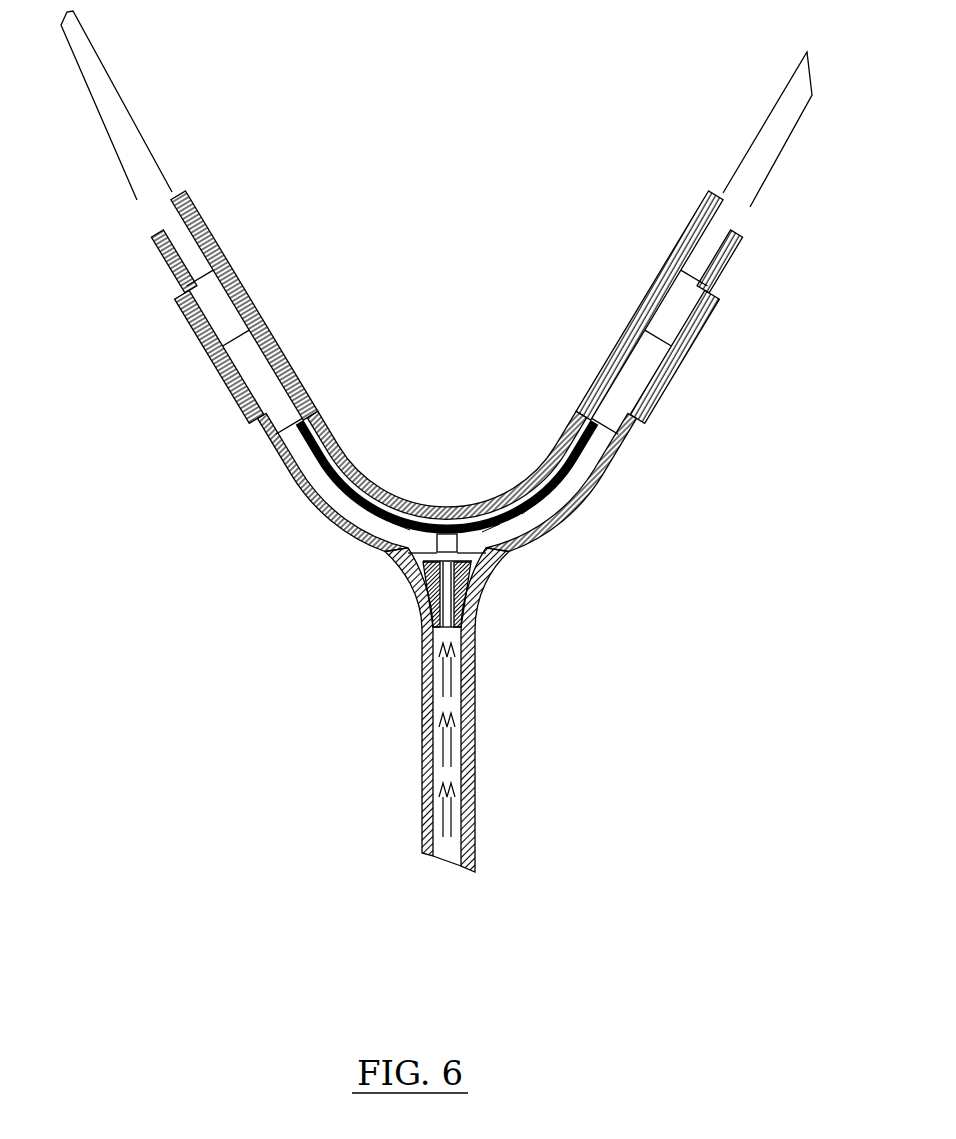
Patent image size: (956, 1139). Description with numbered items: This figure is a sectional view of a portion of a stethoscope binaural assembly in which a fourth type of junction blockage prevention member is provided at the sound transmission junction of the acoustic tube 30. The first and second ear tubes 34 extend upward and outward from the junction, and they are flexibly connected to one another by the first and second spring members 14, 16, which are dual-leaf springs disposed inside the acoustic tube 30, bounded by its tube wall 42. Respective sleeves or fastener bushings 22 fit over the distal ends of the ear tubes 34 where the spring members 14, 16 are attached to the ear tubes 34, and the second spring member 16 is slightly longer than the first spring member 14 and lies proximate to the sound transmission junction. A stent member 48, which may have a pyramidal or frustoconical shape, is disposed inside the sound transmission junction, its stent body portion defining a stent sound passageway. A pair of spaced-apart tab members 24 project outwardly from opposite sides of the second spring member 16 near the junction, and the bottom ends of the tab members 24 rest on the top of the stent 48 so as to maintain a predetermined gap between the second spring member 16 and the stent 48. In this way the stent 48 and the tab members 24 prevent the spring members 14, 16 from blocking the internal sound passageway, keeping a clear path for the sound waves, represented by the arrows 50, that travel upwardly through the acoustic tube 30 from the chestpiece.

The first spring member 14 is at (488, 505).
The second spring member 16 is at (540, 517).
The fastener bushing 22 is at (253, 365).
The tab member 24 is at (407, 566).
The acoustic tube 30 is at (477, 835).
The ear tube 34 is at (142, 155).
The tube wall 42 is at (348, 462).
The stent member 48 is at (475, 600).
The arrows 50 is at (327, 525).